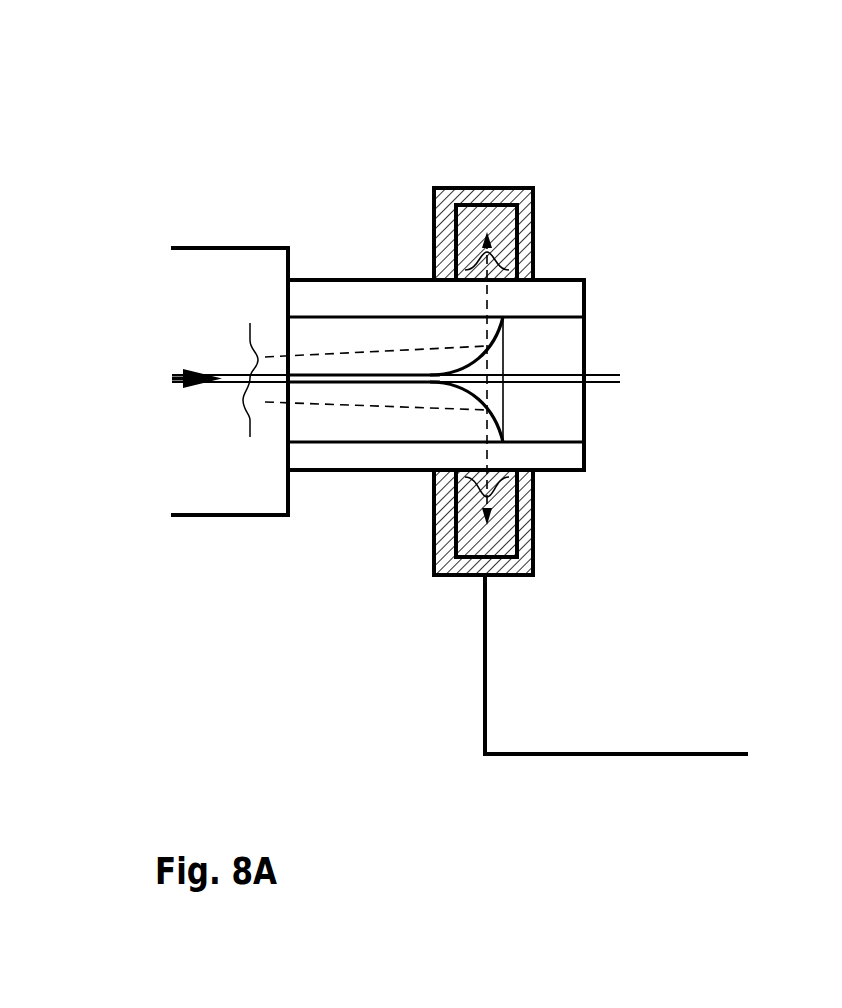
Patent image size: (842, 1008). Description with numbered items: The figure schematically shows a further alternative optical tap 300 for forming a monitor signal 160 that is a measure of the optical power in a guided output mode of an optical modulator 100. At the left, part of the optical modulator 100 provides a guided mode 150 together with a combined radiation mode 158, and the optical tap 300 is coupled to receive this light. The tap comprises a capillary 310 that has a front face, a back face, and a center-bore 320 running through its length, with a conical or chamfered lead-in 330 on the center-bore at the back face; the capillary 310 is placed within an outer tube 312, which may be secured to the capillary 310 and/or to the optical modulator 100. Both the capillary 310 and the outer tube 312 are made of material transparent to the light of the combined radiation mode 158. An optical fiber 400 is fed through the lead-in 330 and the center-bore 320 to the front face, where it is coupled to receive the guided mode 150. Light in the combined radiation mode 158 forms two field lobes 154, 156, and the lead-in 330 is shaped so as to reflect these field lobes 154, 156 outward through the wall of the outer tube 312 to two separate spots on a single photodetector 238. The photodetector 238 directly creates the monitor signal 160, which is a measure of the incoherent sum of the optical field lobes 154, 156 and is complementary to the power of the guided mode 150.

The optical modulator 100 is at (229, 307).
The guided mode 150 is at (211, 499).
The combined radiation mode 158 is at (365, 476).
The monitor signal 160 is at (708, 699).
The field lobe 154 is at (546, 266).
The field lobe 156 is at (546, 460).
The photodetector 238 is at (616, 664).
The optical tap 300 is at (485, 386).
The capillary 310 is at (427, 284).
The outer tube 312 is at (436, 189).
The center-bore 320 is at (395, 441).
The lead-in 330 is at (510, 354).
The optical fiber 400 is at (415, 422).